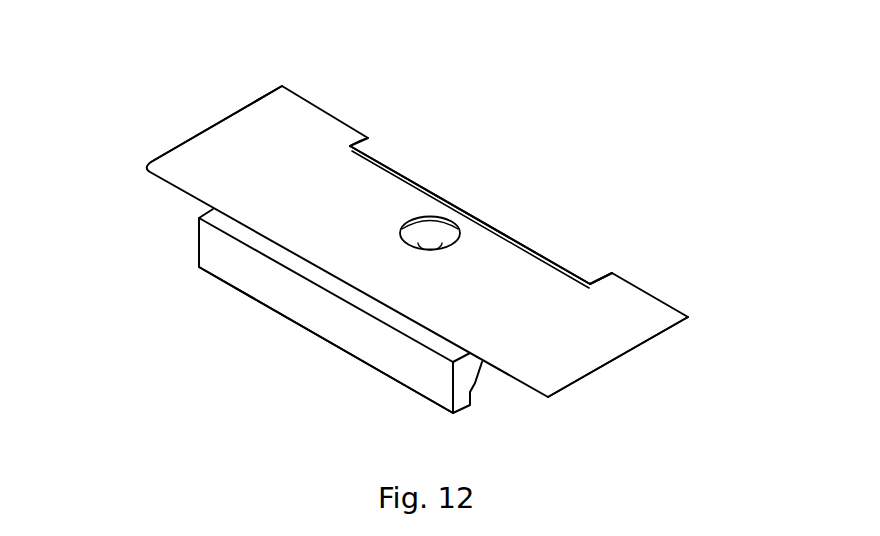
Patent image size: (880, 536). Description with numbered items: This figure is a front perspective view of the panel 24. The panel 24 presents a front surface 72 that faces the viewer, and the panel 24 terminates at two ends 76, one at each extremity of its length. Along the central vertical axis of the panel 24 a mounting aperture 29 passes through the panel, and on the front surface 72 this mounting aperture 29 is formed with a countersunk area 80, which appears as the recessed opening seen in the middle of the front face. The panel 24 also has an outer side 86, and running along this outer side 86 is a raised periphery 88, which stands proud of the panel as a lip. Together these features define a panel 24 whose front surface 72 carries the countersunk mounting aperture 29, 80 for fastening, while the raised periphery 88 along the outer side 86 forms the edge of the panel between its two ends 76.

The panel 24 is at (168, 95).
The front surface 72 is at (302, 183).
The ends 76 is at (215, 124).
The countersunk area 80 is at (433, 228).
The mounting aperture 29 is at (440, 248).
The outer side 86 is at (325, 289).
The raised periphery 88 is at (327, 341).